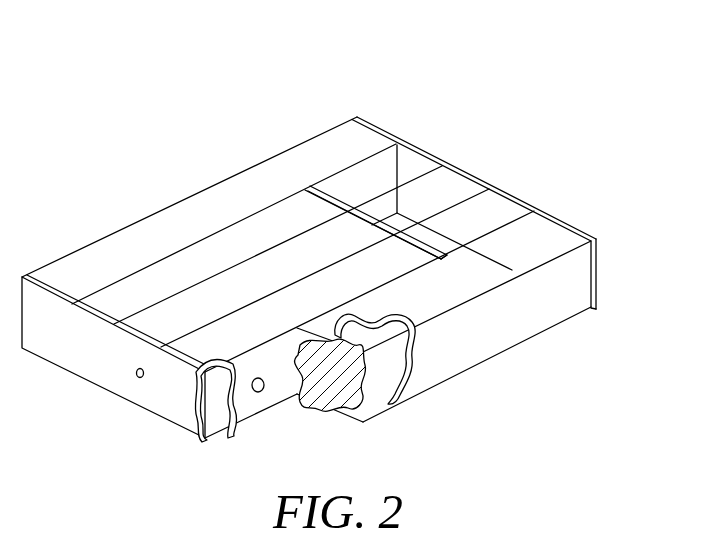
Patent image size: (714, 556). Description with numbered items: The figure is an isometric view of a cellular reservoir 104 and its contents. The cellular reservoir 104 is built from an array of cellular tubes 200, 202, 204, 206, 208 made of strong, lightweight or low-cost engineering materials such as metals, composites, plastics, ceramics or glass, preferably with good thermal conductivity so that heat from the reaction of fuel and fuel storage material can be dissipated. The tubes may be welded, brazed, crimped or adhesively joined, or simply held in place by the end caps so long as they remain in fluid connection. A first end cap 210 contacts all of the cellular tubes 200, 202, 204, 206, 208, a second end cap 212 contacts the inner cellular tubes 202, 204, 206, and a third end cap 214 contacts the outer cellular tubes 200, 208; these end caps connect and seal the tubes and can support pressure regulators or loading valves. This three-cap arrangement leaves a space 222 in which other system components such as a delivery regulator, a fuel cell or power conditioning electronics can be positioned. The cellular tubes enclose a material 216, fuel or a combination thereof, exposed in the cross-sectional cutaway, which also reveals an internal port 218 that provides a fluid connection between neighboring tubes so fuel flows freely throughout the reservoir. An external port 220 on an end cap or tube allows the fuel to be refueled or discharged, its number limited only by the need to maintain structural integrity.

The cellular reservoir 104 is at (604, 60).
The cellular tube 200 is at (98, 241).
The cellular tube 202 is at (160, 253).
The cellular tube 204 is at (210, 278).
The cellular tube 206 is at (250, 300).
The cellular tube 208 is at (525, 341).
The first end cap 210 is at (60, 369).
The second end cap 212 is at (442, 253).
The third end cap 214 is at (428, 148).
The material 216 is at (371, 412).
The internal port 218 is at (258, 392).
The external port 220 is at (140, 378).
The space 222 is at (447, 242).